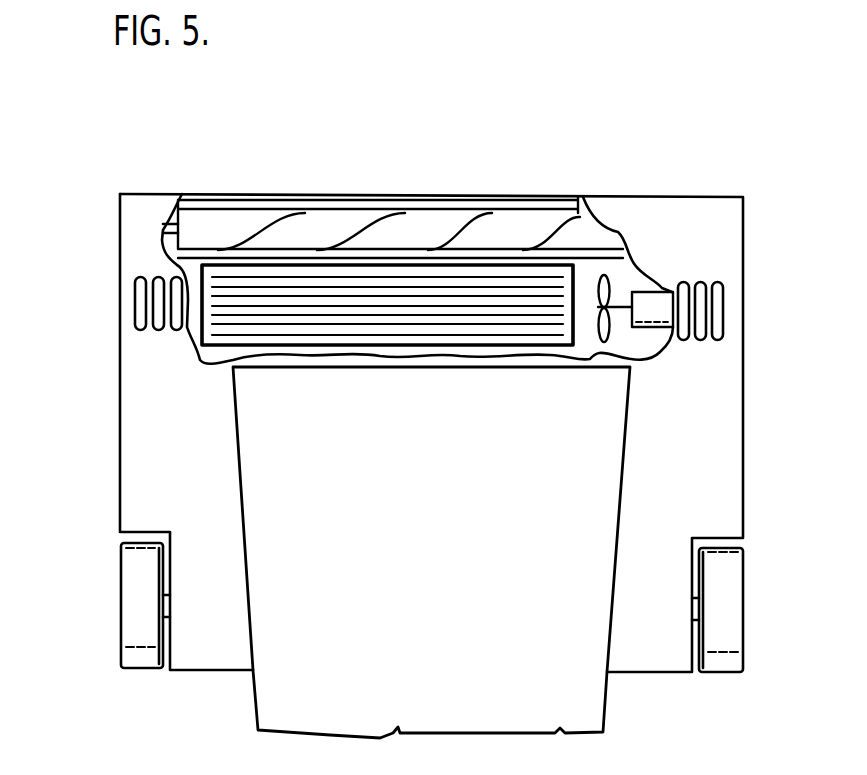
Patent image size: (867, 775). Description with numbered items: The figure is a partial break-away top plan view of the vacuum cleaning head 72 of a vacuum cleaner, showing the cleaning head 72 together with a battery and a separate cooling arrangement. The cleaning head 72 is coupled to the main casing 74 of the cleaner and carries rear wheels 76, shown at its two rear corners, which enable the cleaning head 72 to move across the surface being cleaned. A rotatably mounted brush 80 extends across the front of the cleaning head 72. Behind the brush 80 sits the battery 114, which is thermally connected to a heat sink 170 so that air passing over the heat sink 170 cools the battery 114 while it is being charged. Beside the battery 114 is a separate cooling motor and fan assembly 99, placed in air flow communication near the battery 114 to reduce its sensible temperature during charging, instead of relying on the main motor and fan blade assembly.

The vacuum cleaner head 72 is at (102, 293).
The main casing 74 is at (436, 523).
The rear wheels 76 is at (141, 660).
The rotatably mounted brush 80 is at (428, 228).
The separate cooling motor and fan assembly 99 is at (614, 307).
The battery 114 is at (233, 265).
The heat sink 170 is at (496, 285).